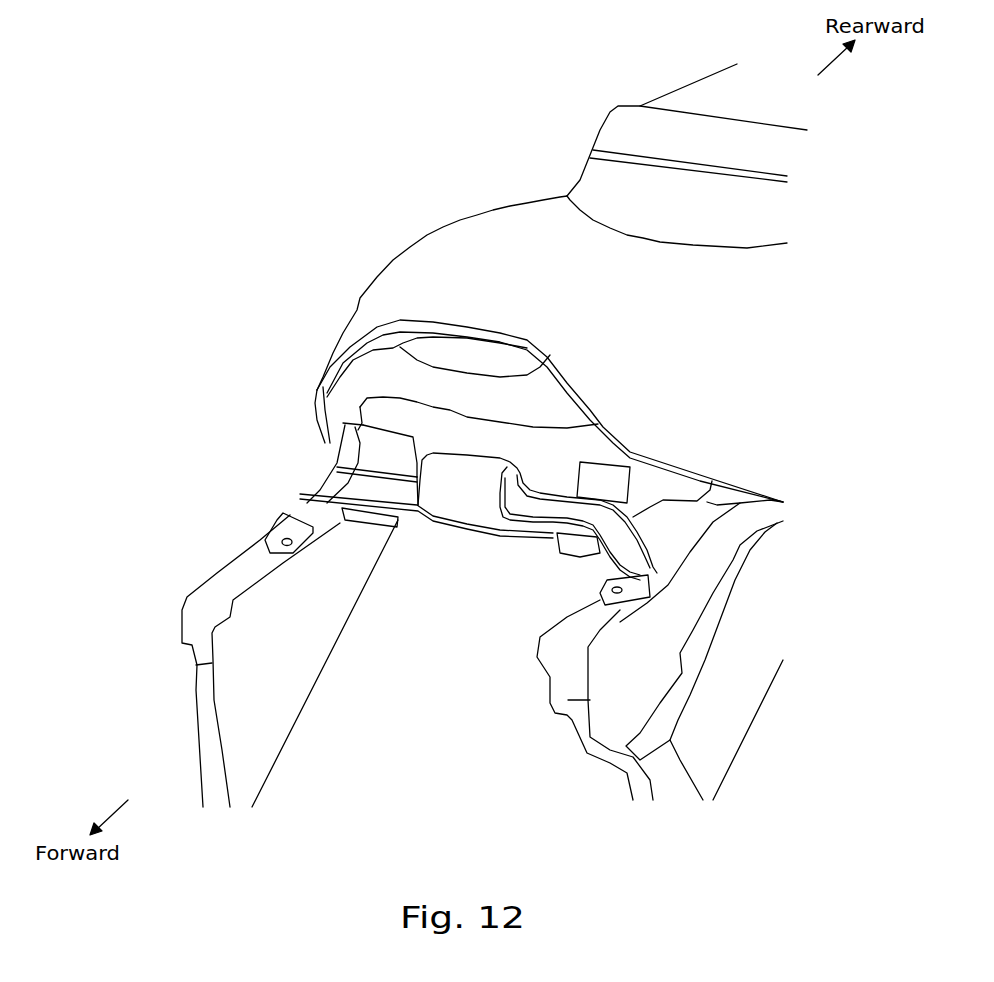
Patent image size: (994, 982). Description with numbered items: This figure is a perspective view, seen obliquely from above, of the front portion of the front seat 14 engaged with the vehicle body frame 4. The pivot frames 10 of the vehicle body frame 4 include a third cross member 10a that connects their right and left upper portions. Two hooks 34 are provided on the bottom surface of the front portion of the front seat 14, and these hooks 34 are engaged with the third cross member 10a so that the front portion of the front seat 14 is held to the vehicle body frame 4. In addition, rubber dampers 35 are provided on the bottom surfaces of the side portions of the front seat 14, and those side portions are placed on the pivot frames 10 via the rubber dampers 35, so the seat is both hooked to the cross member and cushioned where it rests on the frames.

The front seat 14 is at (367, 251).
The third cross member 10a is at (357, 487).
The hooks 34 is at (362, 523).
The rubber dampers 35 is at (727, 497).
The vehicle body frame 4 is at (133, 585).
The pivot frames 10 is at (297, 730).